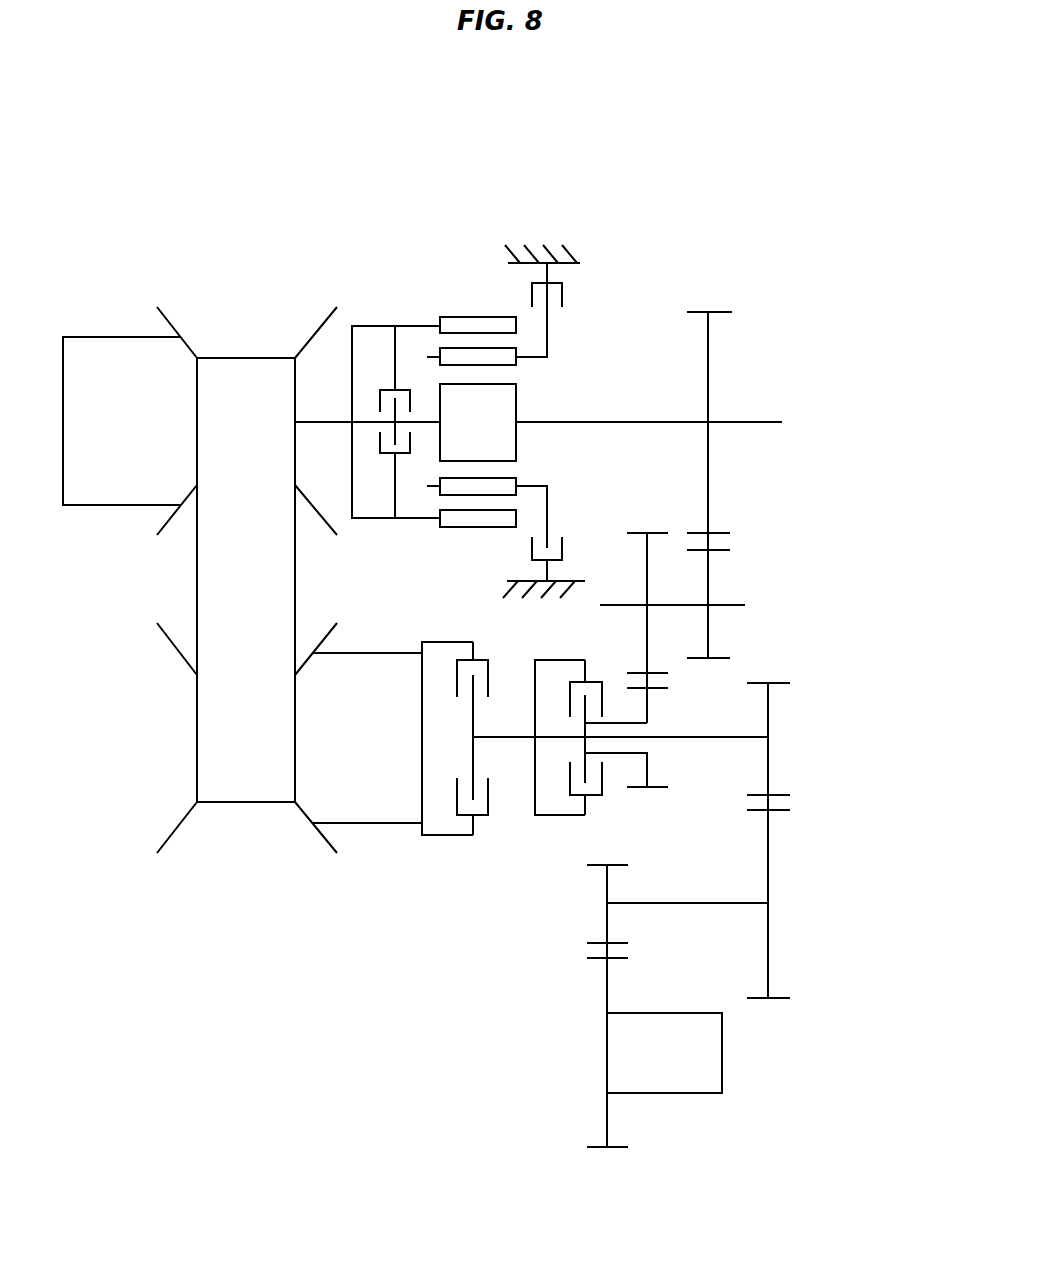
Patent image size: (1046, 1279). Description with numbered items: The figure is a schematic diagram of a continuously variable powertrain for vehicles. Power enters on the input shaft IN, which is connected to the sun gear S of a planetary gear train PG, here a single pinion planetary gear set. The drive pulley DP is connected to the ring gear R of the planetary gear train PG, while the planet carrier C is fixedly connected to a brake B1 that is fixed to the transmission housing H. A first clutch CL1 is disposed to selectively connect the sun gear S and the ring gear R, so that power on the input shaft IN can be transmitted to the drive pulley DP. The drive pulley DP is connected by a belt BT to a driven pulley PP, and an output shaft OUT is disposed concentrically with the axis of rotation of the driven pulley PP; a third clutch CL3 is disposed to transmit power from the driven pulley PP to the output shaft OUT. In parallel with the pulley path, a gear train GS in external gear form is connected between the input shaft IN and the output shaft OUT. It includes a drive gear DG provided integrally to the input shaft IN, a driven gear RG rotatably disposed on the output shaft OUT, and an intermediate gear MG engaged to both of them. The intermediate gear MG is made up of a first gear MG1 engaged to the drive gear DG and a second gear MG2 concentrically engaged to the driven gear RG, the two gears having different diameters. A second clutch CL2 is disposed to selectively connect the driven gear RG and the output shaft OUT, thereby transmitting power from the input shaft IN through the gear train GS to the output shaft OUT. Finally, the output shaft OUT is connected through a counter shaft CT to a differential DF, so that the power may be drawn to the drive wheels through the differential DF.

The drive pulley DP is at (172, 320).
The belt BT is at (205, 573).
The driven pulley PP is at (173, 833).
The first clutch CL1 is at (358, 320).
The planet carrier C is at (385, 390).
The ring gear R is at (428, 357).
The planetary gear train PG is at (476, 315).
The sun gear S is at (516, 398).
The transmission housing H is at (537, 260).
The brake B1 is at (568, 291).
The gear train GS is at (714, 310).
The input shaft IN is at (747, 422).
The drive gear DG is at (720, 533).
The first gear MG1 is at (730, 550).
The second gear MG2 is at (660, 685).
The intermediate gear MG is at (878, 577).
The output shaft OUT is at (730, 737).
The third clutch CL3 is at (455, 813).
The second clutch CL2 is at (568, 798).
The driven gear RG is at (657, 788).
The counter shaft CT is at (768, 903).
The differential DF is at (722, 1058).